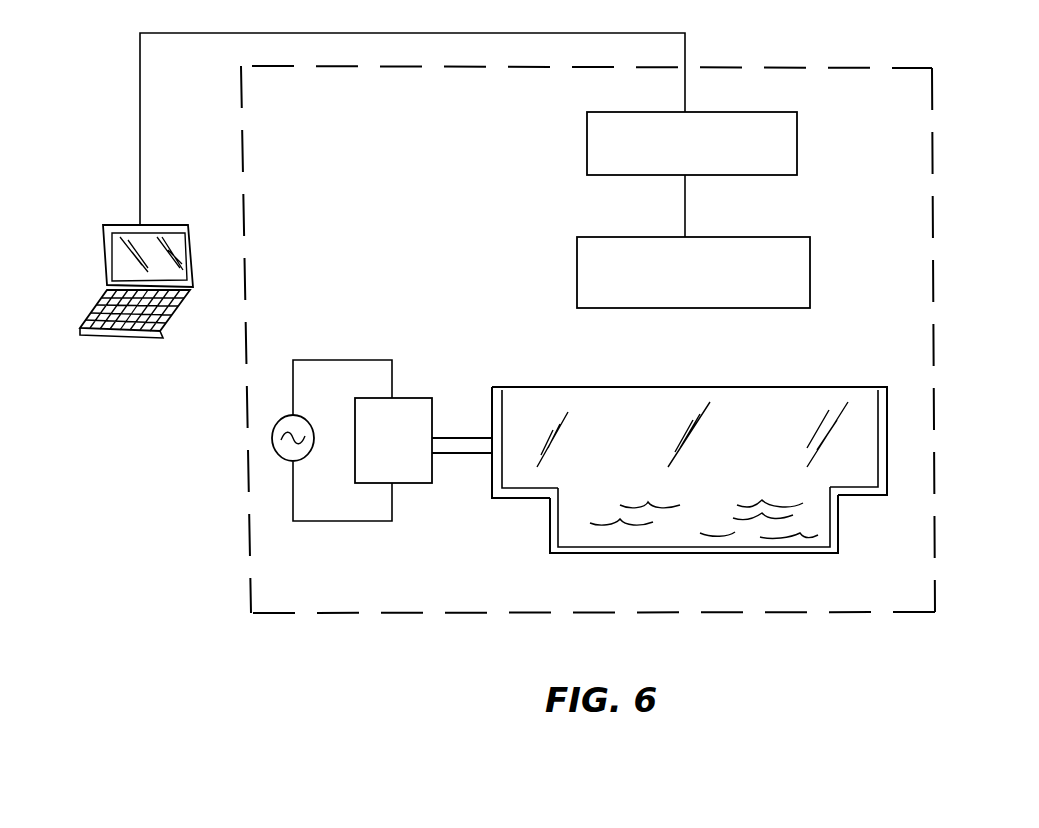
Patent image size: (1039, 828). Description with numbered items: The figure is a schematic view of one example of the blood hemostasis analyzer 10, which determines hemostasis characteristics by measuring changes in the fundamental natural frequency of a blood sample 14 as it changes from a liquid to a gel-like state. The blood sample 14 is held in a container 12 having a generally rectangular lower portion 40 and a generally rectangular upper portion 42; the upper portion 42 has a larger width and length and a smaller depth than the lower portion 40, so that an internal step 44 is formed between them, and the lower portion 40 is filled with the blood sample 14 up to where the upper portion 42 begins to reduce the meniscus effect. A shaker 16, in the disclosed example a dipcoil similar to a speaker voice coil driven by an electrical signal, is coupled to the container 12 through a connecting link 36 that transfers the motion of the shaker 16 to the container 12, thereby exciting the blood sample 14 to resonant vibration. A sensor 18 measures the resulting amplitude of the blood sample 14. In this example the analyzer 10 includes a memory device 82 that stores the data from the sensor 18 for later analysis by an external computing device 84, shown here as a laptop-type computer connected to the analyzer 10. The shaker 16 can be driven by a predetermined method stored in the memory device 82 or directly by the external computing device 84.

The blood hemostasis analyzer 10 is at (948, 255).
The container 12 is at (840, 520).
The blood sample 14 is at (583, 517).
The shaker 16 is at (398, 438).
The sensor 18 is at (793, 277).
The connecting link 36 is at (467, 453).
The lower portion 40 is at (690, 513).
The upper portion 42 is at (868, 430).
The internal step 44 is at (865, 497).
The memory device 82 is at (770, 142).
The external computing device 84 is at (193, 243).